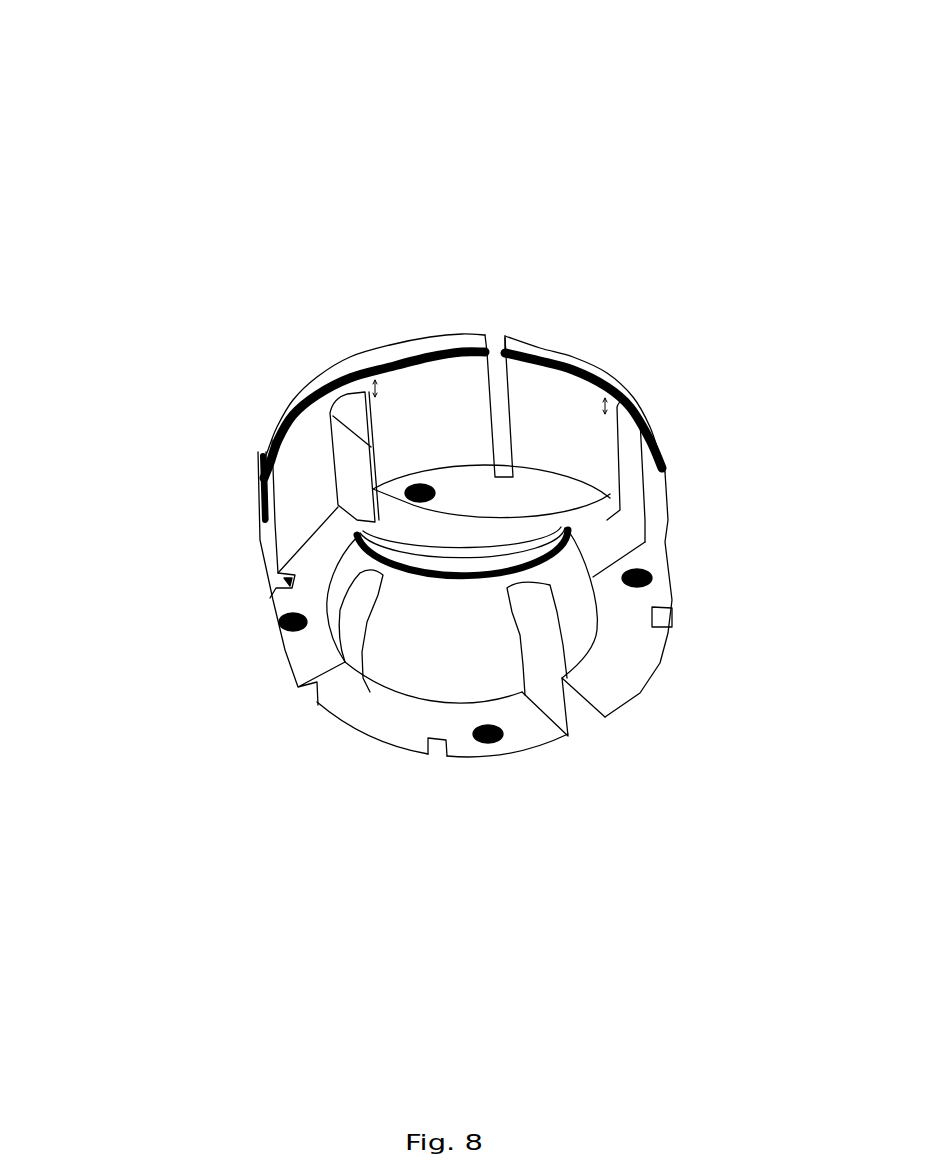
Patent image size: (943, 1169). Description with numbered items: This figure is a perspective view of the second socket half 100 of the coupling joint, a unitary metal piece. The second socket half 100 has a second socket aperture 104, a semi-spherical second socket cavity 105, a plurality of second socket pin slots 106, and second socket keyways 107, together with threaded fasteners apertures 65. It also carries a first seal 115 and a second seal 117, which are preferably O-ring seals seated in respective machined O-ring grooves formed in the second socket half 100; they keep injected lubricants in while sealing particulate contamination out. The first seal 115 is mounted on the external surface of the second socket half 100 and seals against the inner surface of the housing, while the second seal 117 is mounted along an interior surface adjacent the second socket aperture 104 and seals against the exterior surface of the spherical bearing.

The second socket half 100 is at (132, 79).
The second socket aperture 104 is at (480, 563).
The semi-spherical second socket cavity 105 is at (398, 658).
The second socket pin slots 106 is at (357, 390).
The second socket keyways 107 is at (510, 410).
The first seal 115 is at (453, 336).
The second seal 117 is at (560, 557).
The threaded fasteners apertures 65 is at (412, 490).